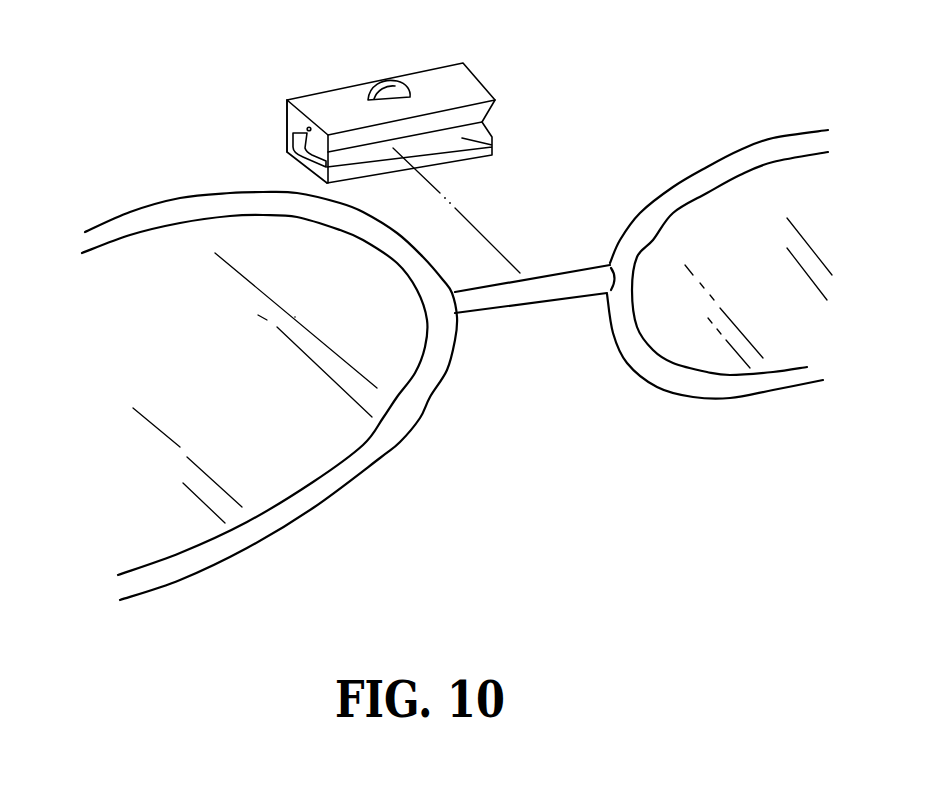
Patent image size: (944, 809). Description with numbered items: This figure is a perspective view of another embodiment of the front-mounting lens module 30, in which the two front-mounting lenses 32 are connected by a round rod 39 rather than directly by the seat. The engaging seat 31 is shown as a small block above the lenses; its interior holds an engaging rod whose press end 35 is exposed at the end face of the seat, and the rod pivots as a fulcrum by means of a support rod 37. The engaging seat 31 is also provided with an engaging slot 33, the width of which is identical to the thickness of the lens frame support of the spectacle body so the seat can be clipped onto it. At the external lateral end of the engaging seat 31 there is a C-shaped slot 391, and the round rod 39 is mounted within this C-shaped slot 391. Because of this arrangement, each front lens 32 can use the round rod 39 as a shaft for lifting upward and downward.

The front-mounting lens module 30 is at (457, 355).
The engaging seat 31 is at (377, 111).
The front-mounting lens 32 is at (795, 143).
The engaging slot 33 is at (477, 157).
The press end 35 is at (382, 92).
The support rod 37 is at (285, 118).
The round rod 39 is at (585, 277).
The C-shaped slot 391 is at (290, 154).